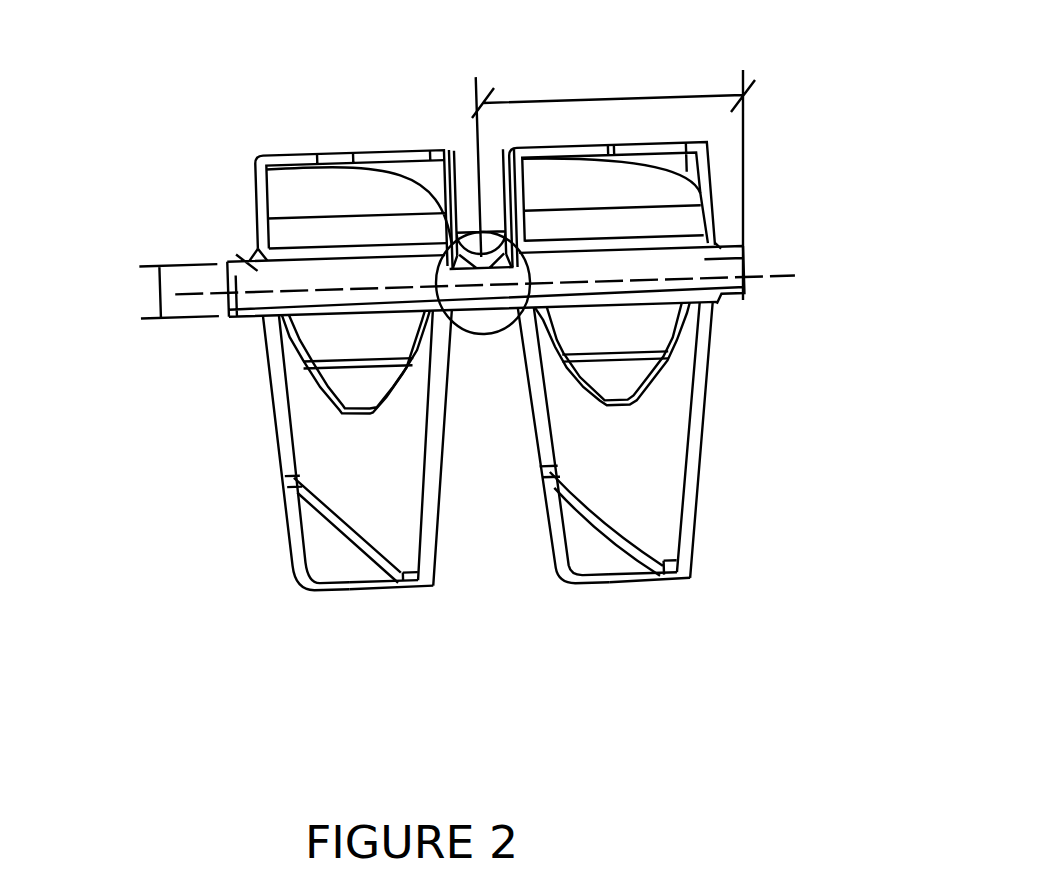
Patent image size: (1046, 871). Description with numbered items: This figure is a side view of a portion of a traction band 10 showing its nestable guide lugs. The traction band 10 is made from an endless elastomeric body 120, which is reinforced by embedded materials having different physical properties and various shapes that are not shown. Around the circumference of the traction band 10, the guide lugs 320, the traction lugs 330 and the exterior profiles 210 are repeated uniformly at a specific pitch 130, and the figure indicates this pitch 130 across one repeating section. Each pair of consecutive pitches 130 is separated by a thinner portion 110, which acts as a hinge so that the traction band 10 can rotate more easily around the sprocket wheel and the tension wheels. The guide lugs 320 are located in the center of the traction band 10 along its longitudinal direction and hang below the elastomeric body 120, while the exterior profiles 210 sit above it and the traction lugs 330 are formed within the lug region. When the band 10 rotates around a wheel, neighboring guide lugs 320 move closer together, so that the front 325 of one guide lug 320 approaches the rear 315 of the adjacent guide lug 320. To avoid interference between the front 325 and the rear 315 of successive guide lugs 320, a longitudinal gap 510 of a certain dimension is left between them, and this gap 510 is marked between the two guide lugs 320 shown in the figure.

The traction band 10 is at (197, 133).
The thinner portion 110 is at (463, 220).
The endless elastomeric body 120 is at (155, 294).
The pitch 130 is at (580, 93).
The exterior profile 210 is at (314, 175).
The rear of guide lug 315 is at (450, 422).
The guide lug 320 is at (330, 430).
The front of guide lug 325 is at (268, 457).
The traction lug 330 is at (355, 345).
The longitudinal gap 510 is at (482, 492).